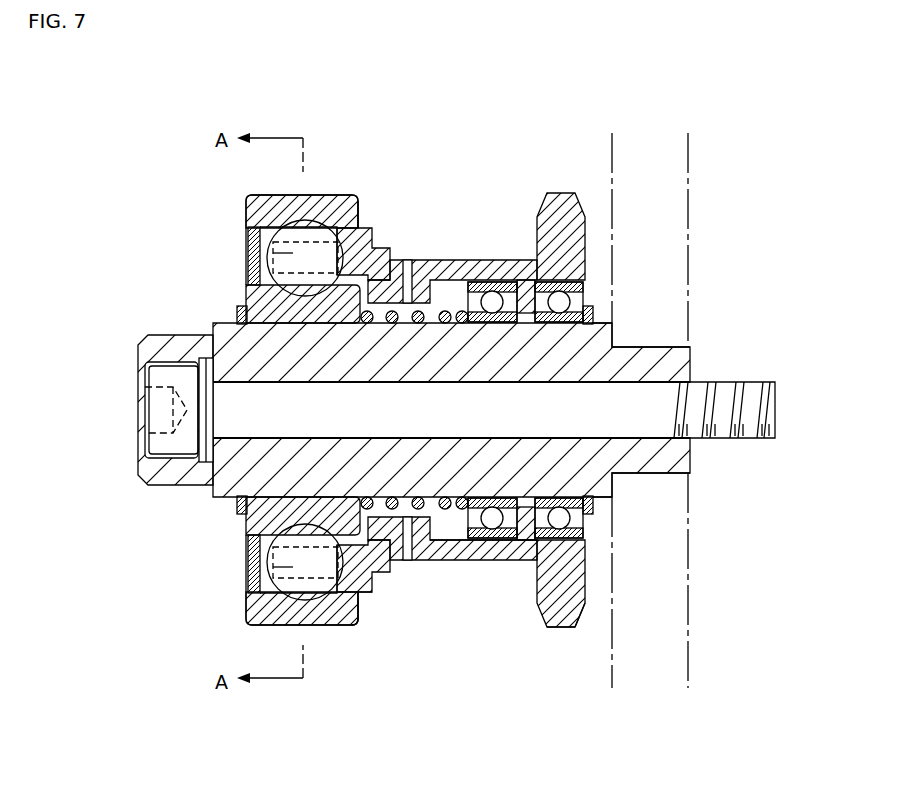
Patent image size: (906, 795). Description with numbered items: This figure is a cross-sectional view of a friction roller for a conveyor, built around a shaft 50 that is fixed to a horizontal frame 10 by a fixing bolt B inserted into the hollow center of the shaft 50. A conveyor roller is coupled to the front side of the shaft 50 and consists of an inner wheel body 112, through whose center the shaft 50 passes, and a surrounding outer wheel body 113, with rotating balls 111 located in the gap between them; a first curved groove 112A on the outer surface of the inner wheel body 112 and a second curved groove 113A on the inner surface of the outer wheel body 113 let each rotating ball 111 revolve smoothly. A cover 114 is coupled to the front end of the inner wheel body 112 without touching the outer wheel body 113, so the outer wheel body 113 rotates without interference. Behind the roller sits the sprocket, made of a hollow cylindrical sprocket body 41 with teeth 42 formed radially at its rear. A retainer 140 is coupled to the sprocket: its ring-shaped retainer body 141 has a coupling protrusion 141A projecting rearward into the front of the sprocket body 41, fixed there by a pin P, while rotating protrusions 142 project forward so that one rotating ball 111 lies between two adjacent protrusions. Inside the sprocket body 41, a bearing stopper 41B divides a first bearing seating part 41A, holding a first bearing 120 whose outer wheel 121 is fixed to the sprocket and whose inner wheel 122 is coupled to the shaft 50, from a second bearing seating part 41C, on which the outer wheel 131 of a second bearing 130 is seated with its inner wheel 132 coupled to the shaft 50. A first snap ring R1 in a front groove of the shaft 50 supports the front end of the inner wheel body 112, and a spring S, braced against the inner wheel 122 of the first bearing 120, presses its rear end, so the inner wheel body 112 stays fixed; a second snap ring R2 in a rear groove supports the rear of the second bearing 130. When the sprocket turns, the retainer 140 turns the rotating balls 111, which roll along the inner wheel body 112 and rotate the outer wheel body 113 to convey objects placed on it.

The horizontal frame 10 is at (677, 165).
The sprocket body 41 is at (450, 262).
The first bearing seating part 41A is at (510, 561).
The bearing stopper 41B is at (555, 628).
The second bearing seating part 41C is at (570, 628).
The teeth 42 is at (560, 205).
The shaft 50 is at (165, 342).
The rotating ball 111 is at (252, 197).
The inner wheel body 112 is at (265, 300).
The first curved groove 112A is at (307, 287).
The outer wheel body 113 is at (313, 195).
The second curved groove 113A is at (340, 200).
The cover 114 is at (250, 265).
The first bearing 120 is at (492, 552).
The outer wheel of first bearing 121 is at (500, 290).
The inner wheel of first bearing 122 is at (470, 287).
The second bearing 130 is at (596, 534).
The outer wheel of second bearing 131 is at (588, 289).
The inner wheel of second bearing 132 is at (598, 368).
The retainer 140 is at (373, 227).
The retainer body 141 is at (360, 620).
The coupling protrusion 141A is at (371, 596).
The rotating protrusion 142 is at (248, 224).
The fixing bolt B is at (735, 430).
The pin P is at (408, 258).
The spring S is at (458, 307).
The first snap ring R1 is at (240, 318).
The second snap ring R2 is at (593, 318).